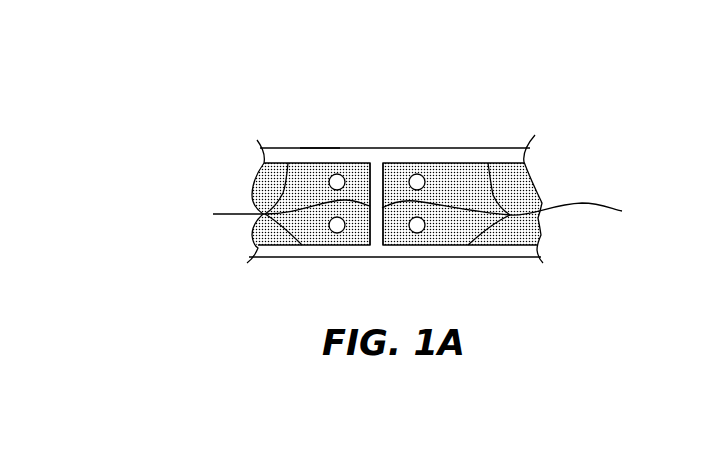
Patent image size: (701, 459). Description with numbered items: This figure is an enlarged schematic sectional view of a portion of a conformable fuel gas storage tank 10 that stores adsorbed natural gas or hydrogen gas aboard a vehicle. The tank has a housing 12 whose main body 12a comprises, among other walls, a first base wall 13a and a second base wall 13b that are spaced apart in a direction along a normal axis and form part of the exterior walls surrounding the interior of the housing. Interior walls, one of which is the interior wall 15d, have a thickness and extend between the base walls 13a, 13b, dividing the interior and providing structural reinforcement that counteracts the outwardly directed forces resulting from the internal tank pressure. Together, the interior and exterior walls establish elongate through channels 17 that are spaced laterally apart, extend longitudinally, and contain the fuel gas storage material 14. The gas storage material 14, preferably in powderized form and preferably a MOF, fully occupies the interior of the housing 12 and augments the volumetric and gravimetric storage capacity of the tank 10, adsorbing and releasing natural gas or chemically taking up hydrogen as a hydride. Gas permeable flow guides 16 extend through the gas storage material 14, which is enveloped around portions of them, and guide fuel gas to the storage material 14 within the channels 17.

The conformable fuel gas storage tank 10 is at (418, 173).
The housing 12 is at (514, 130).
The main body 12a is at (298, 136).
The first base wall 13a is at (378, 258).
The second base wall 13b is at (383, 148).
The fuel gas storage material 14 is at (271, 191).
The interior wall 15d is at (378, 202).
The gas permeable flow guides 16 is at (437, 188).
The elongate through channels 17 is at (418, 213).